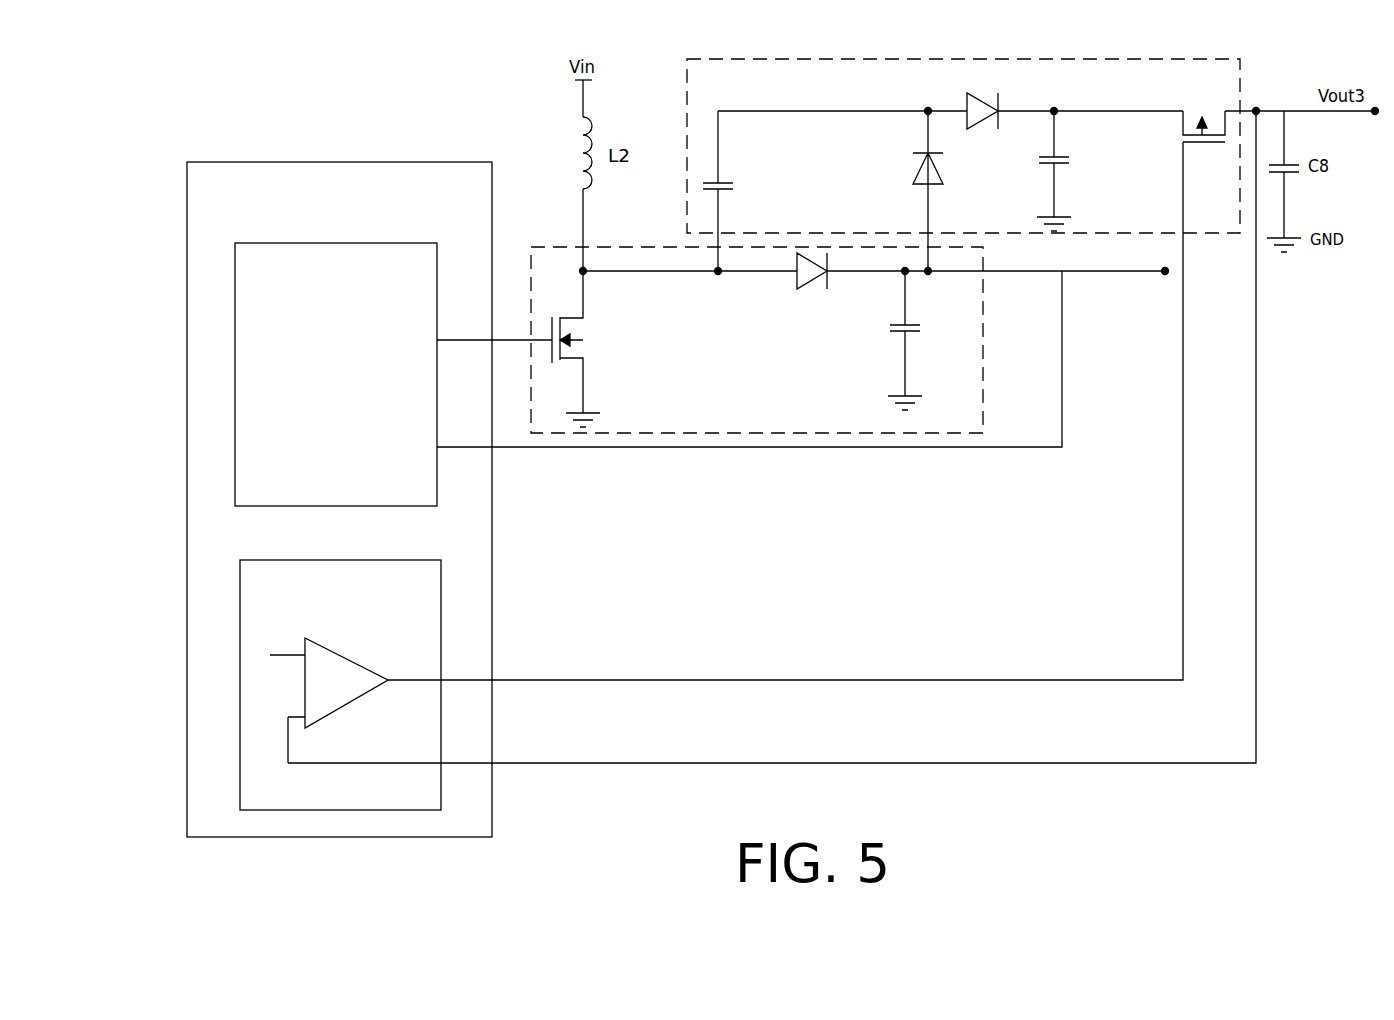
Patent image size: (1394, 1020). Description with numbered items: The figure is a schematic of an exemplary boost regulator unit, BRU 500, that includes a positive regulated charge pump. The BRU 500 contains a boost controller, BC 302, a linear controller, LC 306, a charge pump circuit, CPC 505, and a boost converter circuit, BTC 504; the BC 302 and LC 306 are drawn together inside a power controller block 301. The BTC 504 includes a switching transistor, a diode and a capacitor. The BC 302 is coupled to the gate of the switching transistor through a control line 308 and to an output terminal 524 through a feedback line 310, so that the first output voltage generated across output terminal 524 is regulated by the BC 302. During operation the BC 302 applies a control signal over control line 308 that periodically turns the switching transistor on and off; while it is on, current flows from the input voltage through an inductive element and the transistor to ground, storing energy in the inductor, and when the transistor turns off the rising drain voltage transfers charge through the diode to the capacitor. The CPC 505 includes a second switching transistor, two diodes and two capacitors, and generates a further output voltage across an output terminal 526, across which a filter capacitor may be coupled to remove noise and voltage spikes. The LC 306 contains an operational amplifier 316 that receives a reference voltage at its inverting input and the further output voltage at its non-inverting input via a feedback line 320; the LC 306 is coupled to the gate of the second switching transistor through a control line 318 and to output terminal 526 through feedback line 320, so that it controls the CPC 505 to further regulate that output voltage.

The BRU 500 is at (236, 61).
The power controller 301 is at (264, 158).
The BC 302 is at (272, 243).
The linear controller 306 is at (274, 560).
The control line 308 is at (468, 346).
The feedback line 310 is at (468, 453).
The operational amplifier 316 is at (339, 657).
The control line 318 is at (470, 686).
The feedback line 320 is at (470, 770).
The BTC 504 is at (633, 433).
The CPC 505 is at (718, 58).
The output terminal 524 is at (1090, 280).
The output terminal 526 is at (1307, 120).